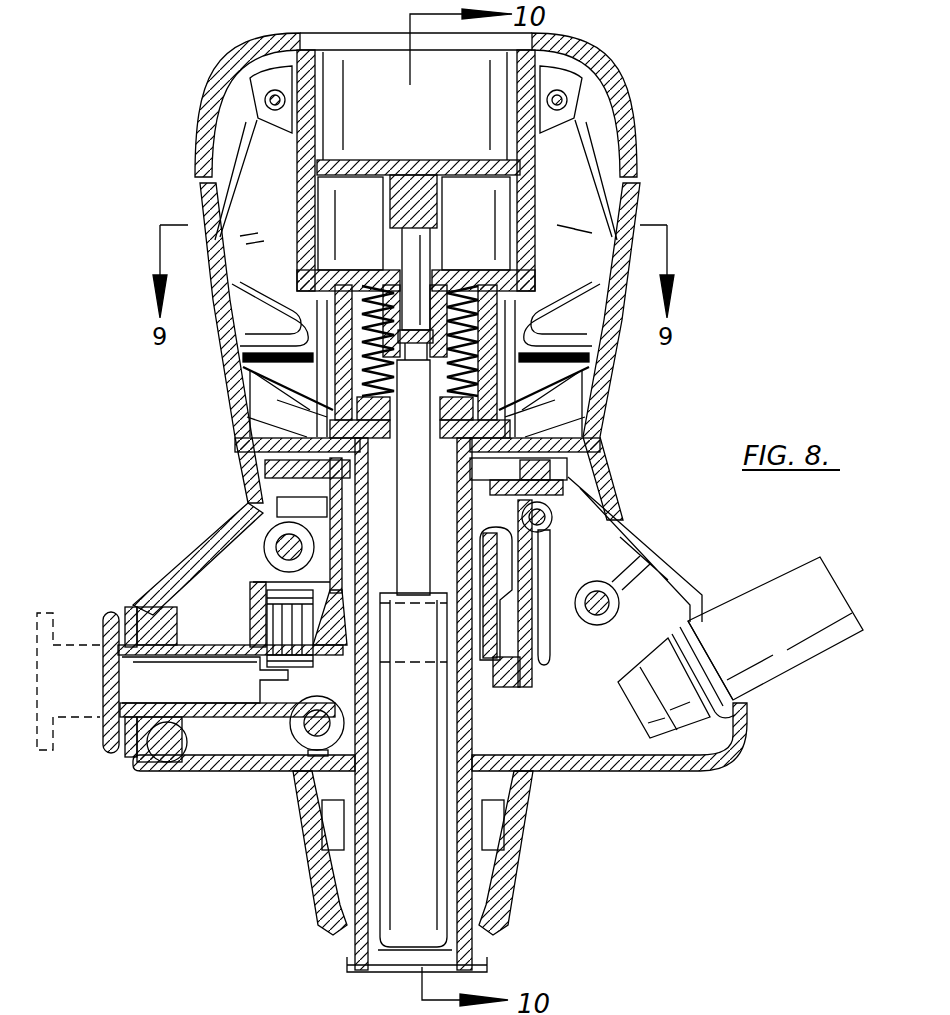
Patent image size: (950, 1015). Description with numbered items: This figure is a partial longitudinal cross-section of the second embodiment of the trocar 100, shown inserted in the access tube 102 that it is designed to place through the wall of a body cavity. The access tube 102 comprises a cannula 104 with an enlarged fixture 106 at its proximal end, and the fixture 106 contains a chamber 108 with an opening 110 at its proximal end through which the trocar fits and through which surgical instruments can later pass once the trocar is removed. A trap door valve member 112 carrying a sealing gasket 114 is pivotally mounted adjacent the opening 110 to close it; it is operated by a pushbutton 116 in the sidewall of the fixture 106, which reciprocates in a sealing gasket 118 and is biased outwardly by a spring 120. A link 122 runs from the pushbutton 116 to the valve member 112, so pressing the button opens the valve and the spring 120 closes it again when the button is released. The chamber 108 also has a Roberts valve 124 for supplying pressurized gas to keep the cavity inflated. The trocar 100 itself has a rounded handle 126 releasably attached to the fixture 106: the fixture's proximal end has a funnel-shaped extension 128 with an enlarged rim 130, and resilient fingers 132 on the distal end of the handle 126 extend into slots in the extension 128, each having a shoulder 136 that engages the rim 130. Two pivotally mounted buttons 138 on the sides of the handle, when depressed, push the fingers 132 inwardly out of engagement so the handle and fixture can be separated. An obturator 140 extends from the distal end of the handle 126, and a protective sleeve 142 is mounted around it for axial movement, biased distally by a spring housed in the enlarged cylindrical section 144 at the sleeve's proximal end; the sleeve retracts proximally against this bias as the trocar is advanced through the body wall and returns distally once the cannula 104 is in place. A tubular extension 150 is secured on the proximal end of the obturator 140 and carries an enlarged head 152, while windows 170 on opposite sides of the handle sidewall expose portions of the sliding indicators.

The trocar 100 is at (684, 418).
The access tube 102 is at (504, 937).
The cannula 104 is at (345, 955).
The fixture 106 is at (682, 770).
The chamber 108 is at (612, 542).
The opening 110 is at (300, 690).
The trap door valve member 112 is at (533, 663).
The sealing gasket 114 is at (497, 712).
The pushbutton 116 is at (110, 610).
The sealing gasket 118 is at (185, 762).
The spring 120 is at (280, 581).
The link 122 is at (500, 690).
The Roberts valve 124 is at (788, 655).
The handle 126 is at (628, 108).
The funnel-shaped extension 128 is at (238, 441).
The rim 130 is at (595, 352).
The resilient fingers 132 is at (230, 344).
The shoulder 136 is at (313, 412).
The buttons 138 is at (198, 207).
The obturator 140 is at (430, 838).
The protective sleeve 142 is at (478, 882).
The cylindrical section 144 is at (540, 315).
The tubular extension 150 is at (530, 208).
The head 152 is at (447, 158).
The windows 170 is at (395, 982).